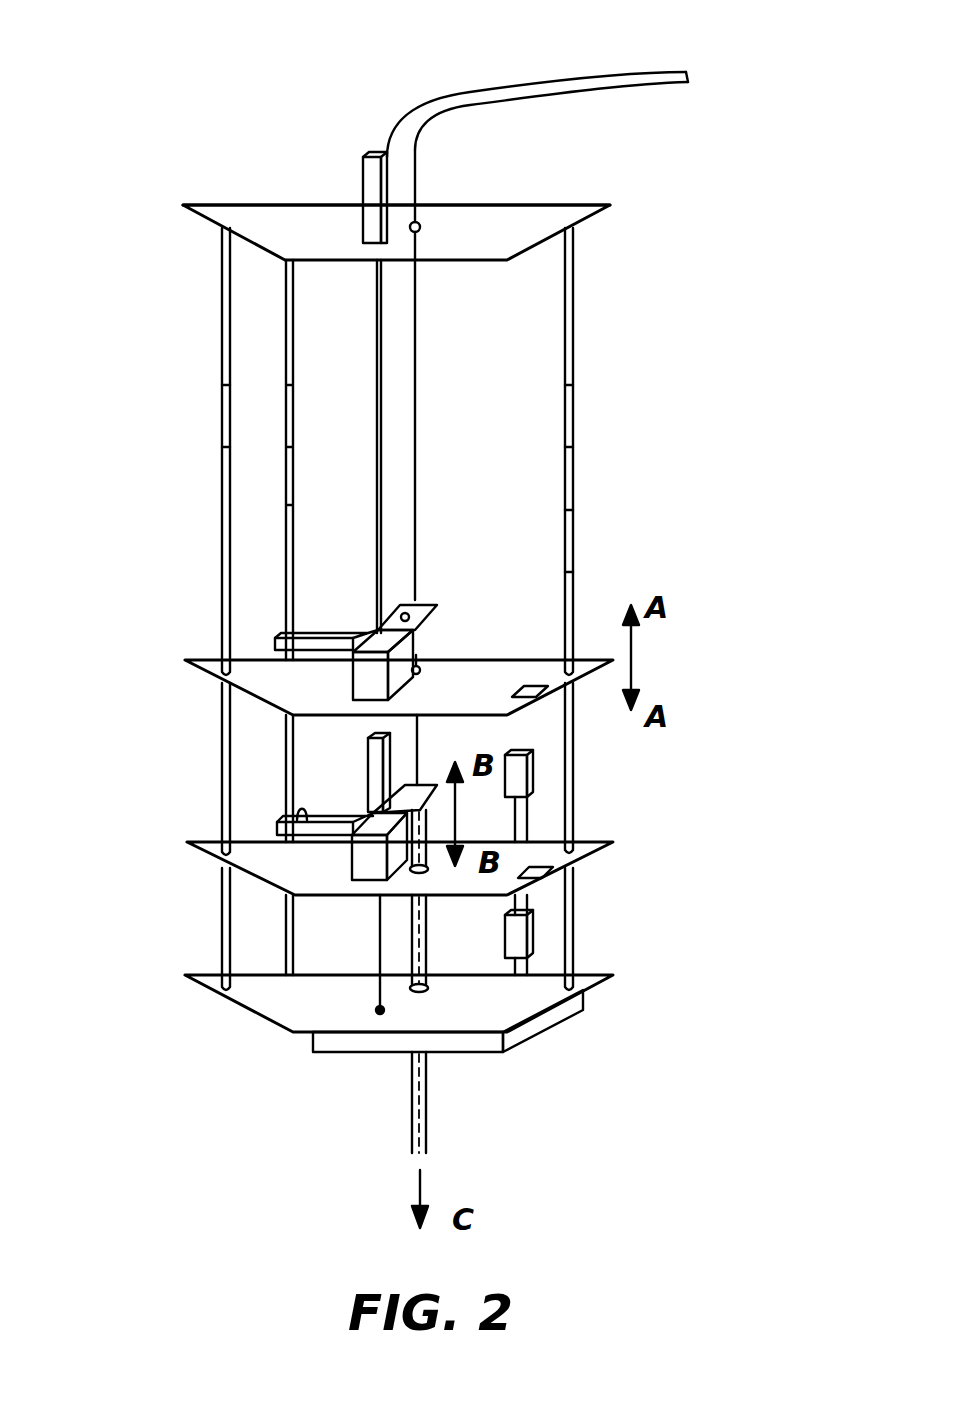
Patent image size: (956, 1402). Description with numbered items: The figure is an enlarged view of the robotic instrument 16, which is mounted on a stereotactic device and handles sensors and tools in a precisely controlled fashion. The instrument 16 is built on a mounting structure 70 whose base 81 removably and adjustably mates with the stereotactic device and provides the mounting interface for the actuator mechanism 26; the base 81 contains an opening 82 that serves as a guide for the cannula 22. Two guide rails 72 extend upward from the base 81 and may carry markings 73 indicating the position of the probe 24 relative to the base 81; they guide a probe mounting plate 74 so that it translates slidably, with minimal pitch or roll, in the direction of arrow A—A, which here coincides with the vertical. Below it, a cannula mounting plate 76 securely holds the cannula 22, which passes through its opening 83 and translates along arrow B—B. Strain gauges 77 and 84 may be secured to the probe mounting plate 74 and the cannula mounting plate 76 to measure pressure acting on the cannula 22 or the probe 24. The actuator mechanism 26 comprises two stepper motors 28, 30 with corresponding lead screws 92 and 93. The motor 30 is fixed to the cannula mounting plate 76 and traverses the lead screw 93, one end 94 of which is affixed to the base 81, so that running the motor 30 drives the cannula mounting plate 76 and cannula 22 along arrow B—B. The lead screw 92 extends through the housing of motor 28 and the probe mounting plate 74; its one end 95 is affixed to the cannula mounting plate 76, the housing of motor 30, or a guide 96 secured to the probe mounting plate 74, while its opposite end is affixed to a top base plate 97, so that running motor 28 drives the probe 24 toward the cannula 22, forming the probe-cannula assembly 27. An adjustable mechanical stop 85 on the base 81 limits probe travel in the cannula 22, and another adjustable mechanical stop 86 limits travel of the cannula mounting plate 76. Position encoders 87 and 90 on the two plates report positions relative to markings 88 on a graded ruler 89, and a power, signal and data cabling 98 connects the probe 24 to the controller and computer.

The robotic instrument 16 is at (174, 168).
The cannula 22 is at (427, 1105).
The probe 24 is at (416, 375).
The actuator mechanism 26 is at (324, 600).
The probe-cannula assembly 27 is at (292, 935).
The motor 28 is at (400, 650).
The motor 30 is at (368, 872).
The mounting structure 70 is at (205, 1012).
The guide rails 72 is at (222, 360).
The markings 73 is at (228, 572).
The probe mounting plate 74 is at (258, 700).
The cannula mounting plate 76 is at (245, 880).
The strain gauges 77 is at (540, 693).
The base 81 is at (540, 1022).
The opening 82 is at (427, 991).
The opening 83 is at (426, 872).
The strain gauges 84 is at (548, 872).
The adjustable mechanical stop 85 is at (528, 790).
The adjustable mechanical stop 86 is at (528, 945).
The position encoder 87 is at (303, 630).
The markings 88 is at (290, 443).
The graded ruler 89 is at (290, 310).
The position encoder 90 is at (282, 822).
The lead screw 92 is at (378, 468).
The lead screw 93 is at (292, 945).
The end 94 is at (380, 1010).
The end 95 is at (372, 733).
The guide 96 is at (368, 765).
The top base plate 97 is at (545, 215).
The cabling 98 is at (600, 72).